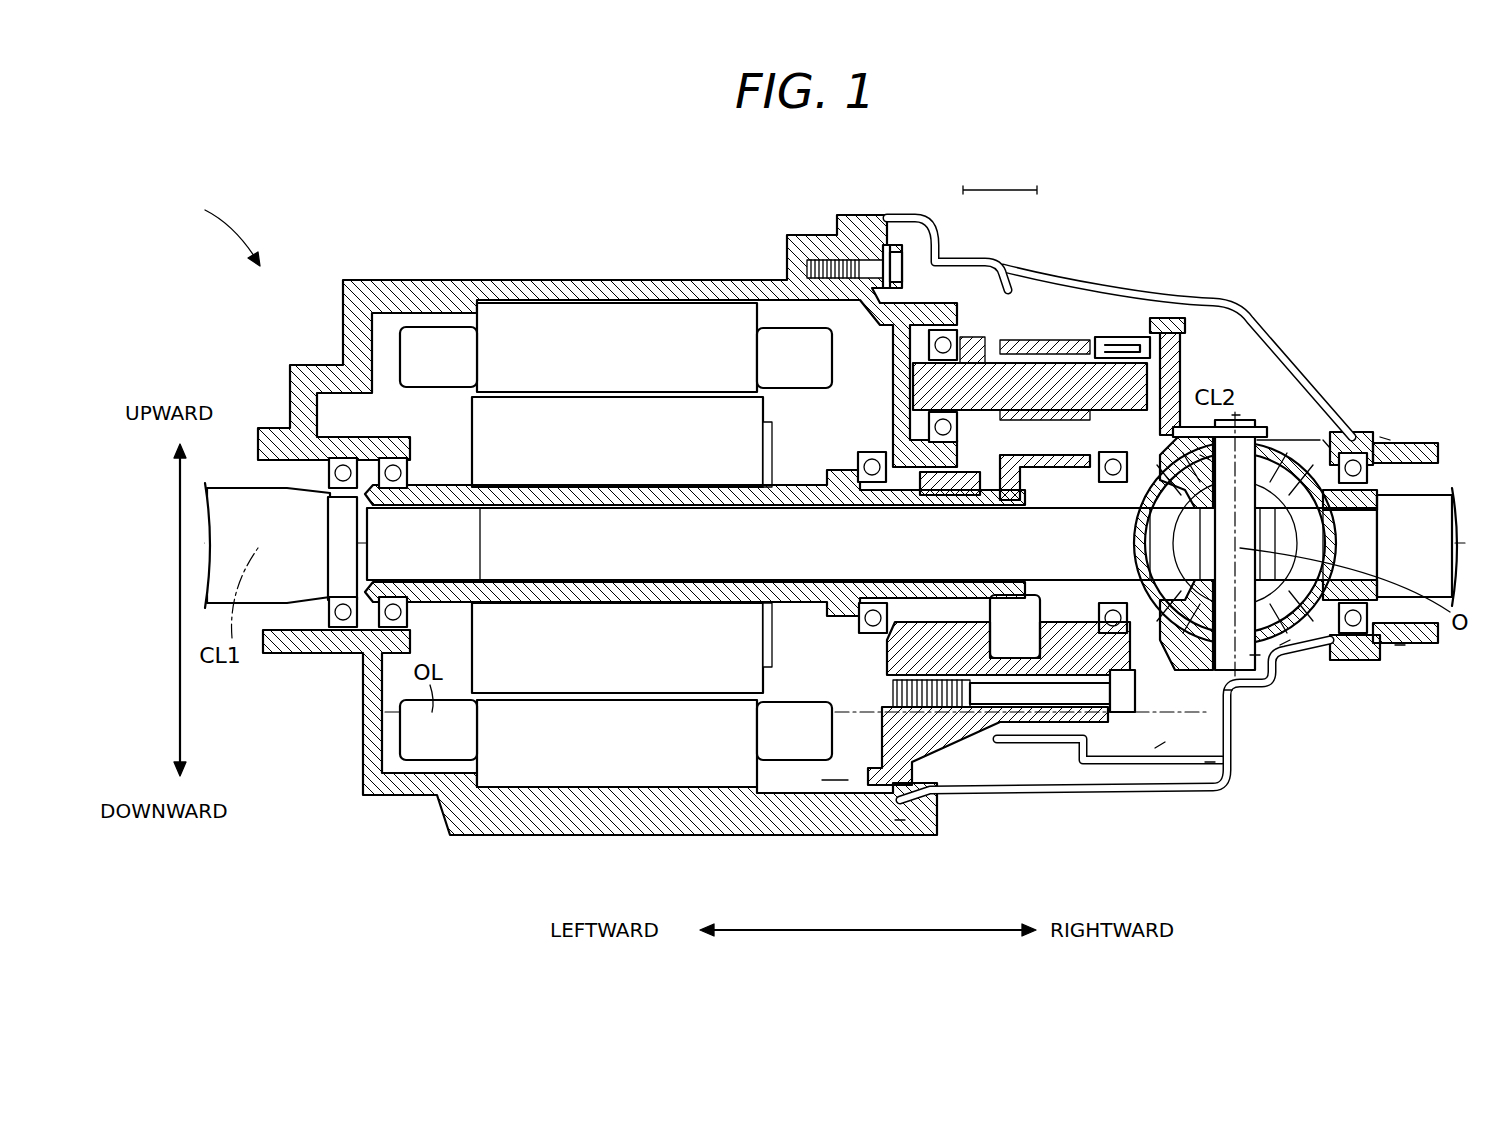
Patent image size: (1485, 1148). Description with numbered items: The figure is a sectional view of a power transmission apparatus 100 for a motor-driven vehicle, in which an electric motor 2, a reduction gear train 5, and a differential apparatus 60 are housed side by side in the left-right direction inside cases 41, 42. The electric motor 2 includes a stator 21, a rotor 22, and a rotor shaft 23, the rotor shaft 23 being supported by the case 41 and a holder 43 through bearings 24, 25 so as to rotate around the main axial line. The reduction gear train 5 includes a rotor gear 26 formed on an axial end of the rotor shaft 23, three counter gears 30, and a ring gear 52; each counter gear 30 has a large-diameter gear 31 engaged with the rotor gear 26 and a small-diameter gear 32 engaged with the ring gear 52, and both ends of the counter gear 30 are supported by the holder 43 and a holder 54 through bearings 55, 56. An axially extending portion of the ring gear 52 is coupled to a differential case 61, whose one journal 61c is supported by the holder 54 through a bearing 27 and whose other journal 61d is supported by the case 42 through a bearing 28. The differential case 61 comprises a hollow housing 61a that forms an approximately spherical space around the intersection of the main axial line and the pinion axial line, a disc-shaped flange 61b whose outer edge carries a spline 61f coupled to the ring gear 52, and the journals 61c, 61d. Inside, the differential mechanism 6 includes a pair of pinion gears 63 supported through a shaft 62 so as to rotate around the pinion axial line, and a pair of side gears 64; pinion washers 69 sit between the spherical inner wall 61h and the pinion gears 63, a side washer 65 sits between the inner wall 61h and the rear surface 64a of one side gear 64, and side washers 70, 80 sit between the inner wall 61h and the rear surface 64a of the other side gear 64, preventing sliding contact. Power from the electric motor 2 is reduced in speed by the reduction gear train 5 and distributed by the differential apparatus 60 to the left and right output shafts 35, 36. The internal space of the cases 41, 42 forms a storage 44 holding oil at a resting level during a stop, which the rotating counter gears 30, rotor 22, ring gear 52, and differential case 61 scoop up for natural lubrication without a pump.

The power transmission apparatus 100 is at (213, 223).
The electric motor 2 is at (386, 326).
The reduction gear train 5 is at (913, 266).
The differential mechanism 6 is at (1275, 426).
The stator 21 is at (477, 330).
The rotor 22 is at (622, 397).
The rotor shaft 23 is at (678, 487).
The bearing 24 is at (410, 470).
The bearing 25 is at (855, 470).
The rotor gear 26 is at (1010, 585).
The bearing 27 is at (1097, 492).
The bearing 28 is at (1380, 648).
The counter gear 30 is at (1000, 177).
The large-diameter gear 31 is at (963, 262).
The small-diameter gear 32 is at (1030, 335).
The output shaft 35 is at (795, 590).
The output shaft 36 is at (1435, 441).
The case 41 is at (360, 798).
The case 42 is at (1053, 792).
The holder 43 is at (900, 822).
The storage 44 is at (835, 769).
The ring gear 52 is at (1064, 345).
The holder 54 is at (1040, 722).
The bearing 55 is at (905, 328).
The bearing 56 is at (1112, 350).
The differential apparatus 60 is at (1260, 410).
The differential case 61 is at (1168, 333).
The housing 61a is at (1285, 645).
The flange 61b is at (1160, 745).
The journal 61c is at (1095, 603).
The journal 61d is at (1398, 645).
The spline 61f is at (1210, 762).
The inner wall 61h is at (1228, 690).
The shaft 62 is at (1255, 655).
The pinion gear 63 is at (1303, 427).
The side gear 64 is at (1323, 440).
The rear surface 64a is at (1160, 712).
The side washer 65 is at (1387, 437).
The pinion washer 69 is at (1235, 415).
The side washer 70 is at (1200, 440).
The side washer 80 is at (1205, 455).